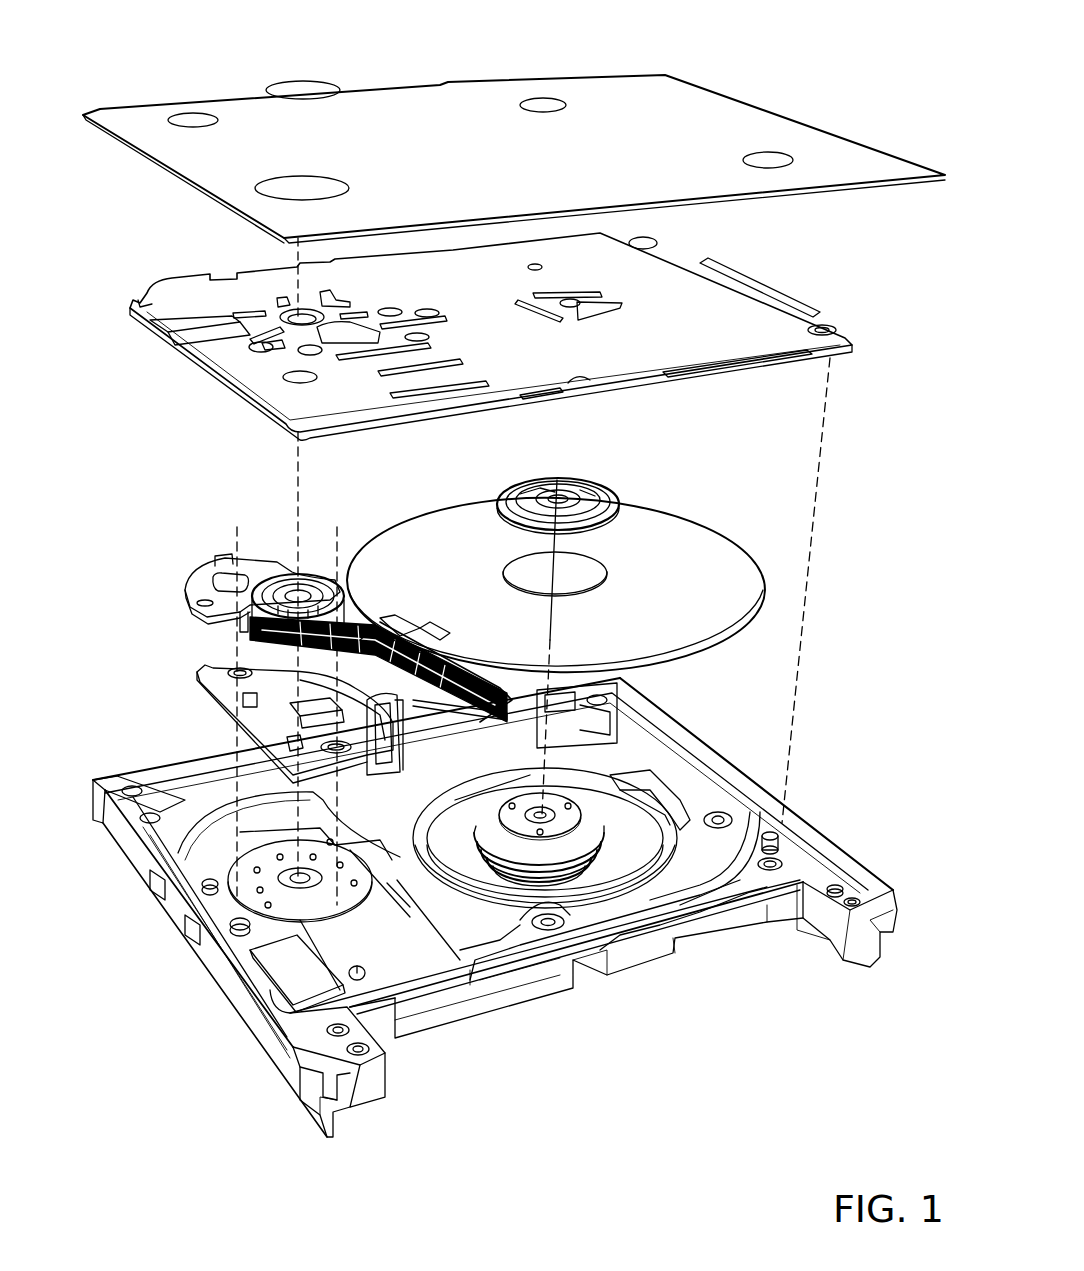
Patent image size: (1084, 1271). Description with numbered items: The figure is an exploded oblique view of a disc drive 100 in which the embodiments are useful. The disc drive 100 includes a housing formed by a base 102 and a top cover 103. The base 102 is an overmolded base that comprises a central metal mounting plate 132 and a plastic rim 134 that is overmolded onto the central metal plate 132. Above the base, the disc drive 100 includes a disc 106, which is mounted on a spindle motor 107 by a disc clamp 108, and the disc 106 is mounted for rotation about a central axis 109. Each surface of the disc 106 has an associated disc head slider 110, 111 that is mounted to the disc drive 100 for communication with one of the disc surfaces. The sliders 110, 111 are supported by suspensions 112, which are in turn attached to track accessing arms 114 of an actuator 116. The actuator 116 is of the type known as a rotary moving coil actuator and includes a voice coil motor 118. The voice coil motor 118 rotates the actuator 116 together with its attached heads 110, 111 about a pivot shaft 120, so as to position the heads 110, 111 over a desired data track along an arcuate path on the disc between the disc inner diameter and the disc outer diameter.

The disc drive 100 is at (400, 55).
The base 102 is at (495, 907).
The top cover 103 is at (735, 345).
The disc 106 is at (693, 523).
The spindle motor 107 is at (568, 868).
The disc clamp 108 is at (610, 493).
The central axis 109 is at (553, 623).
The disc head slider 110 is at (500, 680).
The disc head slider 111 is at (508, 712).
The suspension 112 is at (478, 660).
The track accessing arm 114 is at (393, 617).
The actuator 116 is at (313, 607).
The voice coil motor 118 is at (182, 593).
The pivot shaft 120 is at (298, 594).
The central metal mounting plate 132 is at (354, 893).
The plastic rim 134 is at (455, 990).